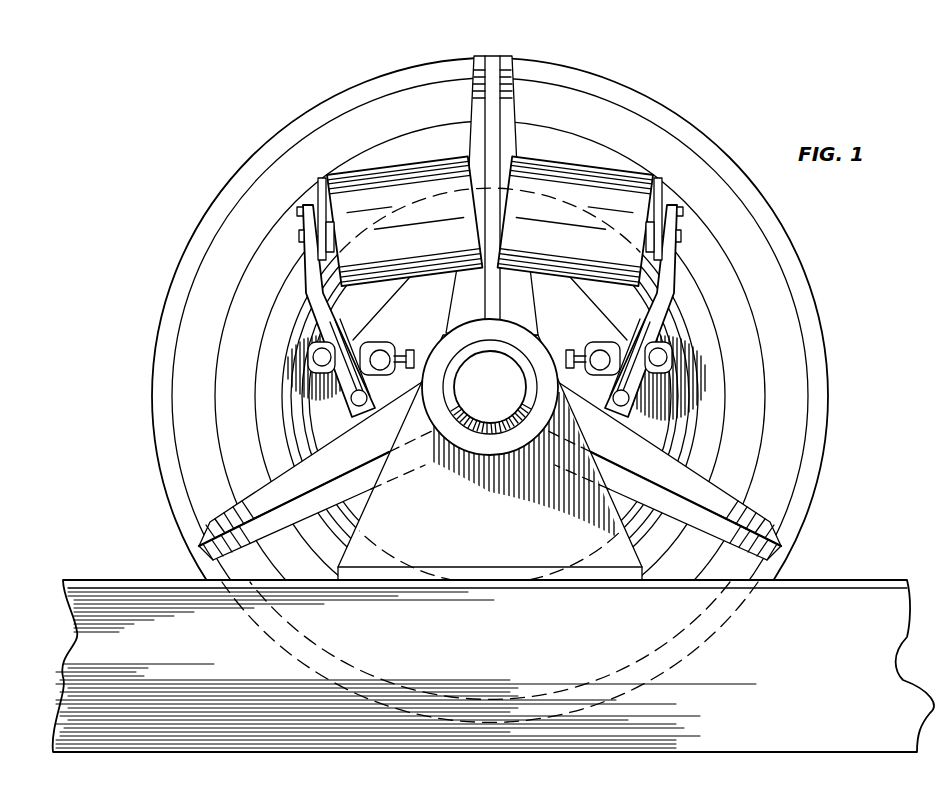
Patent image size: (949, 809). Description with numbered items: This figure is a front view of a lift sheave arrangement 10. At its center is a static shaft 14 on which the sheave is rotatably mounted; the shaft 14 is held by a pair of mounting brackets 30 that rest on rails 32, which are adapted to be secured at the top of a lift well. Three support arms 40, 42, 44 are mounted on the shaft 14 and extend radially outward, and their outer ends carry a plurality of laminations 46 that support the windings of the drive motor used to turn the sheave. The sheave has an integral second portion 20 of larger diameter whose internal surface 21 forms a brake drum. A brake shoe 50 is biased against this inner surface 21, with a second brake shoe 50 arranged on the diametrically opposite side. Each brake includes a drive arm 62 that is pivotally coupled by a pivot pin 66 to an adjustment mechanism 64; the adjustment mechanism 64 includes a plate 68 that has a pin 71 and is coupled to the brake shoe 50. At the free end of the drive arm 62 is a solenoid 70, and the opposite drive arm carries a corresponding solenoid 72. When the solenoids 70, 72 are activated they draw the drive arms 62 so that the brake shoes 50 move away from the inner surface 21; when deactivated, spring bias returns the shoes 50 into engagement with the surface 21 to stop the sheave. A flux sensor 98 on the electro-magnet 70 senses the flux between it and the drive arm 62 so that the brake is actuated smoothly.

The sheave arrangement 10 is at (840, 342).
The static shaft 14 is at (478, 398).
The second portion 20 is at (690, 277).
The internal surface 21 is at (684, 322).
The mounting brackets 30 is at (442, 541).
The rails 32 is at (125, 607).
The support arm 40 is at (493, 105).
The support arm 42 is at (228, 510).
The support arm 44 is at (752, 510).
The laminations 46 is at (250, 278).
The brake shoe 50 is at (318, 403).
The drive arm 62 is at (325, 303).
The adjustment mechanism 64 is at (390, 336).
The pivot pin 66 is at (300, 440).
The plate 68 is at (320, 360).
The solenoid 70 is at (528, 223).
The pin 71 is at (596, 344).
The solenoid 72 is at (423, 223).
The flux sensor 98 is at (322, 195).